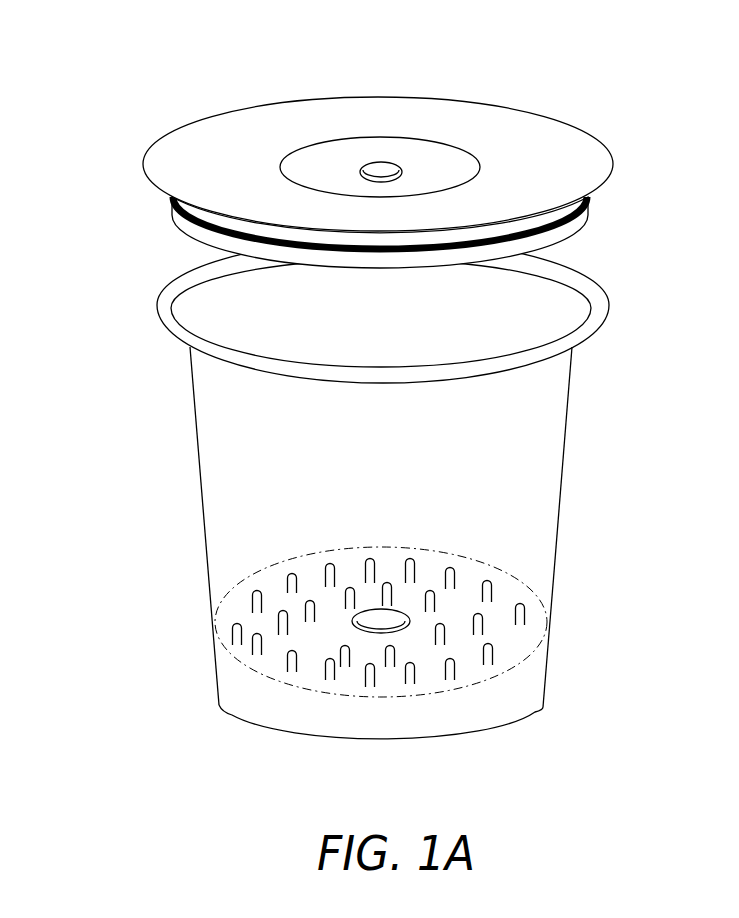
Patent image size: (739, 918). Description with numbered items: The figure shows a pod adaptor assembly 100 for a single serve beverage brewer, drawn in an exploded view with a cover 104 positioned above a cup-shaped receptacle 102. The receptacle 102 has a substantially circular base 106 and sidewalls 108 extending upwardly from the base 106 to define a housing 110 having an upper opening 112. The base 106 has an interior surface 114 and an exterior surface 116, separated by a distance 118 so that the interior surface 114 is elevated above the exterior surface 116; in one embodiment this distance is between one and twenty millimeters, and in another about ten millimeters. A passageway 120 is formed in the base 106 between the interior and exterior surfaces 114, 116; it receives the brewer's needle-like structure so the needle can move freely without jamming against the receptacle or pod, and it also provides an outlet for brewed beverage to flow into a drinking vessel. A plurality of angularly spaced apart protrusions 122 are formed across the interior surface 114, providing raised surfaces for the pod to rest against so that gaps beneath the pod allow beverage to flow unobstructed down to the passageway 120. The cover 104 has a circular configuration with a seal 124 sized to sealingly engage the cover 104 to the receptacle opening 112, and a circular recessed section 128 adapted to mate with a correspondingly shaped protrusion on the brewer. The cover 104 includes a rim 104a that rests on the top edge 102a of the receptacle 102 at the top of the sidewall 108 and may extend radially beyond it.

The pod adaptor assembly 100 is at (375, 416).
The cup-shaped receptacle 102 is at (368, 520).
The top edge 102a is at (160, 316).
The cover 104 is at (340, 162).
The rim 104a is at (153, 183).
The base 106 is at (533, 689).
The sidewalls 108 is at (553, 530).
The housing 110 is at (278, 462).
The upper opening 112 is at (525, 305).
The interior surface 114 is at (428, 565).
The exterior surface 116 is at (433, 742).
The distance 118 is at (322, 594).
The passageway 120 is at (377, 612).
The protrusions 122 is at (294, 578).
The seal 124 is at (590, 190).
The circular recessed section 128 is at (432, 168).